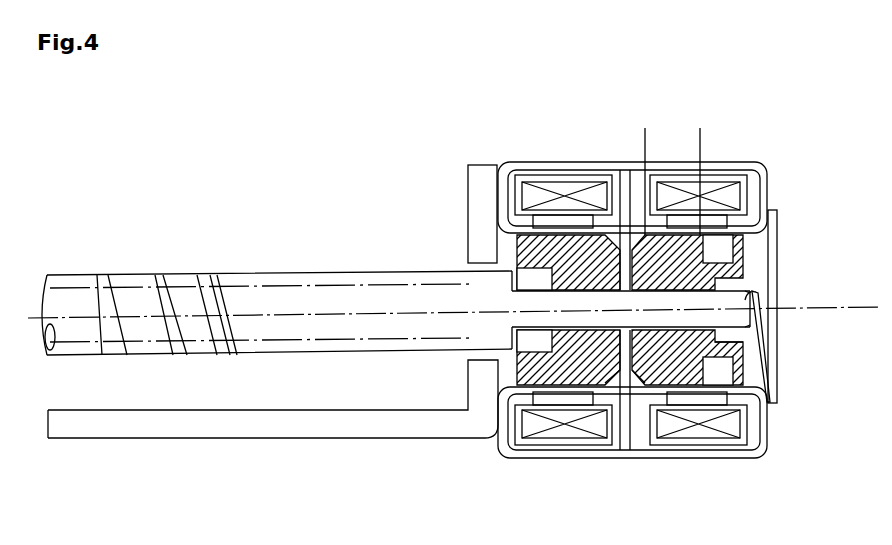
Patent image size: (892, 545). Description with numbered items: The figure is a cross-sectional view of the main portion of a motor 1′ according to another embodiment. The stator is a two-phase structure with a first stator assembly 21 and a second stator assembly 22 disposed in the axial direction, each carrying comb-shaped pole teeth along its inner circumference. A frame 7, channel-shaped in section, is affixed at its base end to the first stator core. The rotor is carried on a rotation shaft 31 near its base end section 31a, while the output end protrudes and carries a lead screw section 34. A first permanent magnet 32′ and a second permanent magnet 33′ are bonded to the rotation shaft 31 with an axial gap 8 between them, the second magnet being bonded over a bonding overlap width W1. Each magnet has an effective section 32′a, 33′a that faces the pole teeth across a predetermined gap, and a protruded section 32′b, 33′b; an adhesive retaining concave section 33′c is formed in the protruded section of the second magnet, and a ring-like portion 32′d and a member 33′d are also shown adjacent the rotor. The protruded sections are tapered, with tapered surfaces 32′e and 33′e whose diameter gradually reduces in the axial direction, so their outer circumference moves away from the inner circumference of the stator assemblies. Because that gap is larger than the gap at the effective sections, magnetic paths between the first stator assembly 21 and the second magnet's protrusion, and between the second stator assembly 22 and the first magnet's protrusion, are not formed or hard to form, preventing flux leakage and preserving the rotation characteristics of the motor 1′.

The motor 1′ is at (172, 196).
The lead screw section 34 is at (283, 275).
The rotation shaft 31 is at (528, 298).
The base end section 31a is at (755, 289).
The first stator assembly 21 is at (522, 162).
The second stator assembly 22 is at (729, 162).
The bonding overlap width W1 is at (700, 141).
The gap 8 is at (627, 257).
The first permanent magnet 32′ is at (515, 247).
The effective section of first permanent magnet 32′a is at (550, 265).
The protruded section of first permanent magnet 32′b is at (590, 352).
The first rotor ring portion 32′d is at (530, 340).
The tapered surface of first permanent magnet 32′e is at (630, 365).
The second permanent magnet 33′ is at (723, 250).
The effective section of second permanent magnet 33′a is at (715, 230).
The protruded section of second permanent magnet 33′b is at (655, 355).
The adhesive retaining concave section 33′c is at (600, 340).
The spring 33′d is at (772, 362).
The tapered surface of second permanent magnet 33′e is at (636, 355).
The frame 7 is at (268, 441).